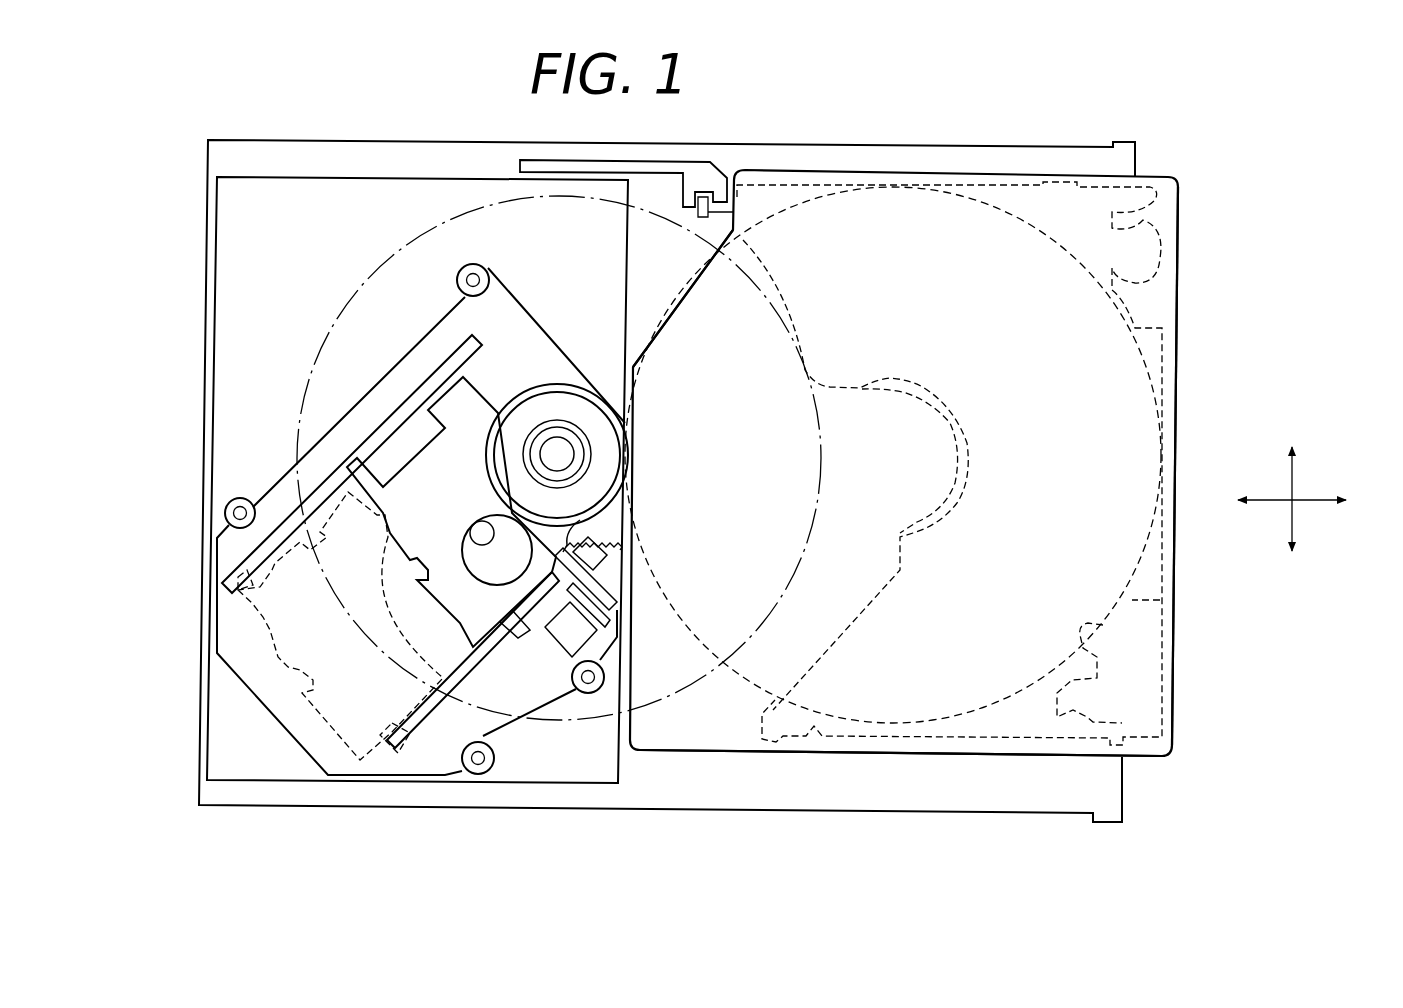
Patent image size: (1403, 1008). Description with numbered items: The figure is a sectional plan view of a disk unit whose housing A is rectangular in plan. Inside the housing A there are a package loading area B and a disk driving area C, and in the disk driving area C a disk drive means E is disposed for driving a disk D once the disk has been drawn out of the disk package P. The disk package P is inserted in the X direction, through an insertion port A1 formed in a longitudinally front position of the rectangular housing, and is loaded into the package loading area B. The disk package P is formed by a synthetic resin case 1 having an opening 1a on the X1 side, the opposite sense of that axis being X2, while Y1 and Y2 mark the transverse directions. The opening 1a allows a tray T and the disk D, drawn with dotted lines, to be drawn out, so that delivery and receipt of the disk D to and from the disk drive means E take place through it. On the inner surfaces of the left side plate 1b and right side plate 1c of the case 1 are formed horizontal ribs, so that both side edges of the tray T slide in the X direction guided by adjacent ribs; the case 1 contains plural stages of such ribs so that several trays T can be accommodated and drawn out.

The synthetic resin case 1 is at (1179, 305).
The opening 1a is at (671, 293).
The left side plate 1b is at (990, 757).
The right side plate 1c is at (932, 172).
The housing A is at (712, 810).
The insertion port A1 is at (1190, 215).
The package loading area B is at (837, 791).
The disk driving area C is at (405, 797).
The disk D is at (338, 293).
The disk drive means E is at (348, 397).
The disk package P is at (1163, 648).
The tray T is at (1162, 347).
The X1 direction X1 is at (1248, 501).
The X2 direction X2 is at (1337, 502).
The Y1 direction Y1 is at (1289, 456).
The Y2 direction Y2 is at (1289, 546).